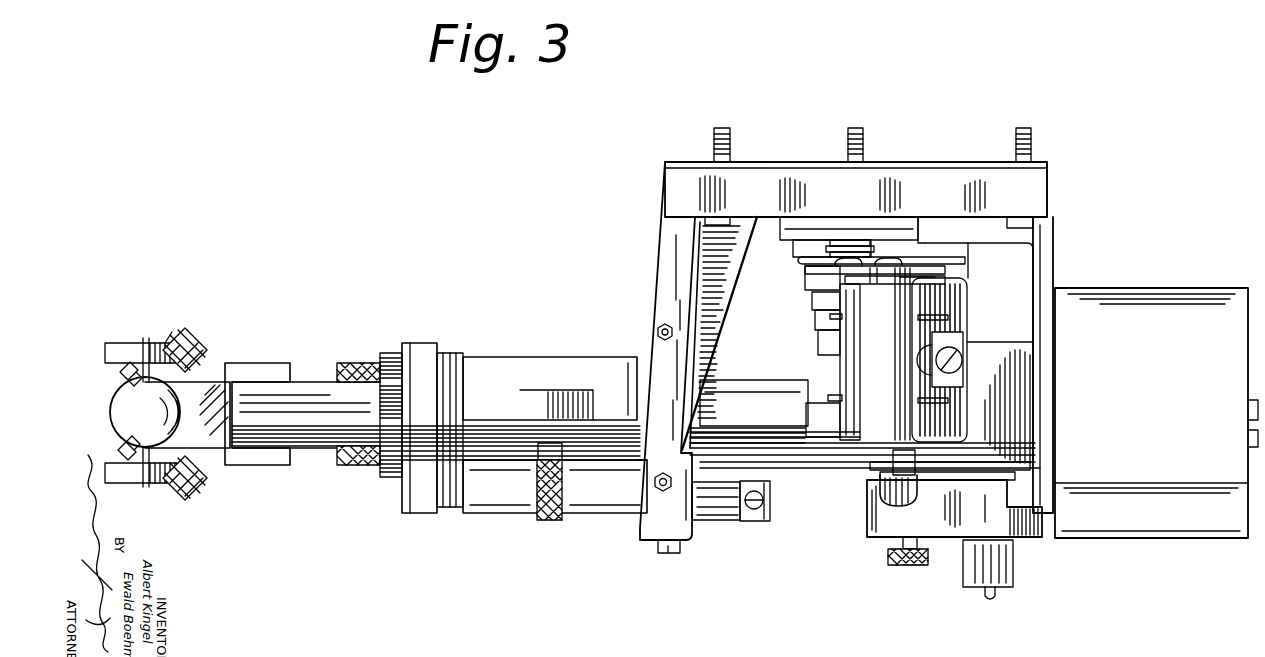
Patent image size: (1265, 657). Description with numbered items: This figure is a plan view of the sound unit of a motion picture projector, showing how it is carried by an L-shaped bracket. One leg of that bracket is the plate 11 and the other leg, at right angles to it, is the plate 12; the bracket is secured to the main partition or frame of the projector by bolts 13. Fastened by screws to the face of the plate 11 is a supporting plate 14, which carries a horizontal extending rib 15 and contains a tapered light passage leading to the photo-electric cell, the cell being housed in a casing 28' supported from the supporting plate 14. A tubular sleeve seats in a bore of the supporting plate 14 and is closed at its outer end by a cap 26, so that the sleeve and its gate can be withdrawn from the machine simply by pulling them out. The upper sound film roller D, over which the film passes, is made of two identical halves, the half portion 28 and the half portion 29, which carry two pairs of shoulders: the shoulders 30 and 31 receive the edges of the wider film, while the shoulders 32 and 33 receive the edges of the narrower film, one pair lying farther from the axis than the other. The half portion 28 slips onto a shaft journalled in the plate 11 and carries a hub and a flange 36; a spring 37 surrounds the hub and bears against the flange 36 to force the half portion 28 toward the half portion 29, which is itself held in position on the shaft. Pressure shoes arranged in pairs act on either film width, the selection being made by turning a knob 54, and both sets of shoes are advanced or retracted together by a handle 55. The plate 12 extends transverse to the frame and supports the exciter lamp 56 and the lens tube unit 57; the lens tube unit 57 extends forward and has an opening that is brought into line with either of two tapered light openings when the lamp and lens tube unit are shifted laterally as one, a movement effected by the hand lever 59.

The plate 11 is at (785, 190).
The plate 12 is at (665, 262).
The bolts 13 is at (727, 127).
The supporting plate 14 is at (1050, 250).
The horizontal extending rib 15 is at (993, 350).
The cap 26 is at (882, 540).
The half portion of roller 28 is at (813, 324).
The casing 28' is at (1156, 438).
The half portion of roller 29 is at (830, 378).
The shoulder 30 is at (808, 275).
The shoulder 31 is at (820, 437).
The shoulder 32 is at (813, 315).
The shoulder 33 is at (826, 400).
The flange 36 is at (800, 259).
The spring 37 is at (856, 243).
The knob 54 is at (903, 492).
The handle 55 is at (993, 600).
The exciter lamp 56 is at (181, 401).
The lens tube unit 57 is at (745, 382).
The hand lever 59 is at (758, 523).
The upper sound film roller D is at (820, 345).